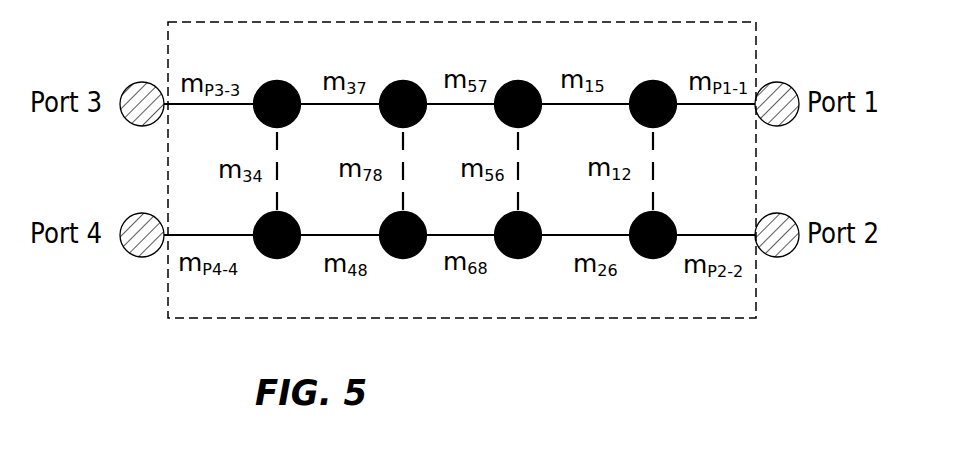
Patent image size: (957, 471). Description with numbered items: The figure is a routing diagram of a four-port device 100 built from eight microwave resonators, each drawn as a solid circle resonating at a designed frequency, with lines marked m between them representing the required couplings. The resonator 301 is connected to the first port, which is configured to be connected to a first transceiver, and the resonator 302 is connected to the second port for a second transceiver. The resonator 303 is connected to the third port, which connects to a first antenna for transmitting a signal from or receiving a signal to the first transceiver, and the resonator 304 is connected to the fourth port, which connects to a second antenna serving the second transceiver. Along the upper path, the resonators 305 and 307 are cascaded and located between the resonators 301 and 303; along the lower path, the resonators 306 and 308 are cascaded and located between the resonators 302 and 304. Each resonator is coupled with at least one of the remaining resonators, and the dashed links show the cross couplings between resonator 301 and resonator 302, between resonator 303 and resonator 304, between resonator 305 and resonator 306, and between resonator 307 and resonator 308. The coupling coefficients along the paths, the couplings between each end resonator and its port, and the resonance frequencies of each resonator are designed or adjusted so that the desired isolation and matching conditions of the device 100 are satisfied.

The four-port device 100 is at (463, 319).
The resonator 301 is at (656, 81).
The resonator 302 is at (657, 258).
The resonator 303 is at (281, 81).
The resonator 304 is at (281, 258).
The resonator 305 is at (524, 81).
The resonator 306 is at (525, 259).
The resonator 307 is at (407, 81).
The resonator 308 is at (408, 259).